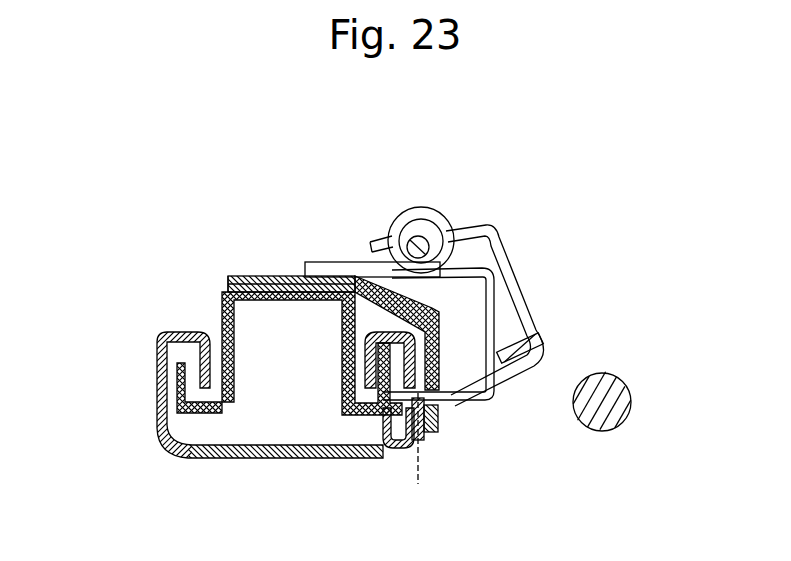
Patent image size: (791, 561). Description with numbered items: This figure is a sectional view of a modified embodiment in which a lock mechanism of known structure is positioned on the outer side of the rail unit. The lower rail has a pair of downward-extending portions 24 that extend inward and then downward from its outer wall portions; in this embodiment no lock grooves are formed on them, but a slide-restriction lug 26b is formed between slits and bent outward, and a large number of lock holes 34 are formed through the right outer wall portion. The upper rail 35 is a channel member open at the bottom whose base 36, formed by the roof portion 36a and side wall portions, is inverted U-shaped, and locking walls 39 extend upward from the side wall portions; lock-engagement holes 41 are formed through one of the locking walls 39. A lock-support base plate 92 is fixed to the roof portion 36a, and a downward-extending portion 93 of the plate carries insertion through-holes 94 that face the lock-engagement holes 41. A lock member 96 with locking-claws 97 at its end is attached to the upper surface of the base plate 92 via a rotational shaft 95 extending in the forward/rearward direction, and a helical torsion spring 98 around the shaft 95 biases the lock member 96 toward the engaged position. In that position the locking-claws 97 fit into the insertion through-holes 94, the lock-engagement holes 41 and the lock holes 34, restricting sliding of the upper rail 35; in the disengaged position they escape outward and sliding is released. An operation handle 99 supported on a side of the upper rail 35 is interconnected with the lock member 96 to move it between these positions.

The downward-extending portion 24 is at (208, 360).
The slide-restriction lug 26b is at (165, 345).
The lock hole 34 is at (417, 450).
The upper rail 35 is at (262, 292).
The base 36 is at (218, 245).
The roof portion 36a is at (250, 277).
The locking wall 39 is at (426, 331).
The lock-engagement hole 41 is at (391, 428).
The lock-support base plate 92 is at (343, 265).
The downward-extending portion 93 is at (430, 438).
The insertion through-hole 94 is at (438, 412).
The rotational shaft 95 is at (424, 240).
The lock member 96 is at (518, 300).
The locking-claw 97 is at (382, 402).
The helical torsion spring 98 is at (545, 323).
The operation handle 99 is at (628, 392).